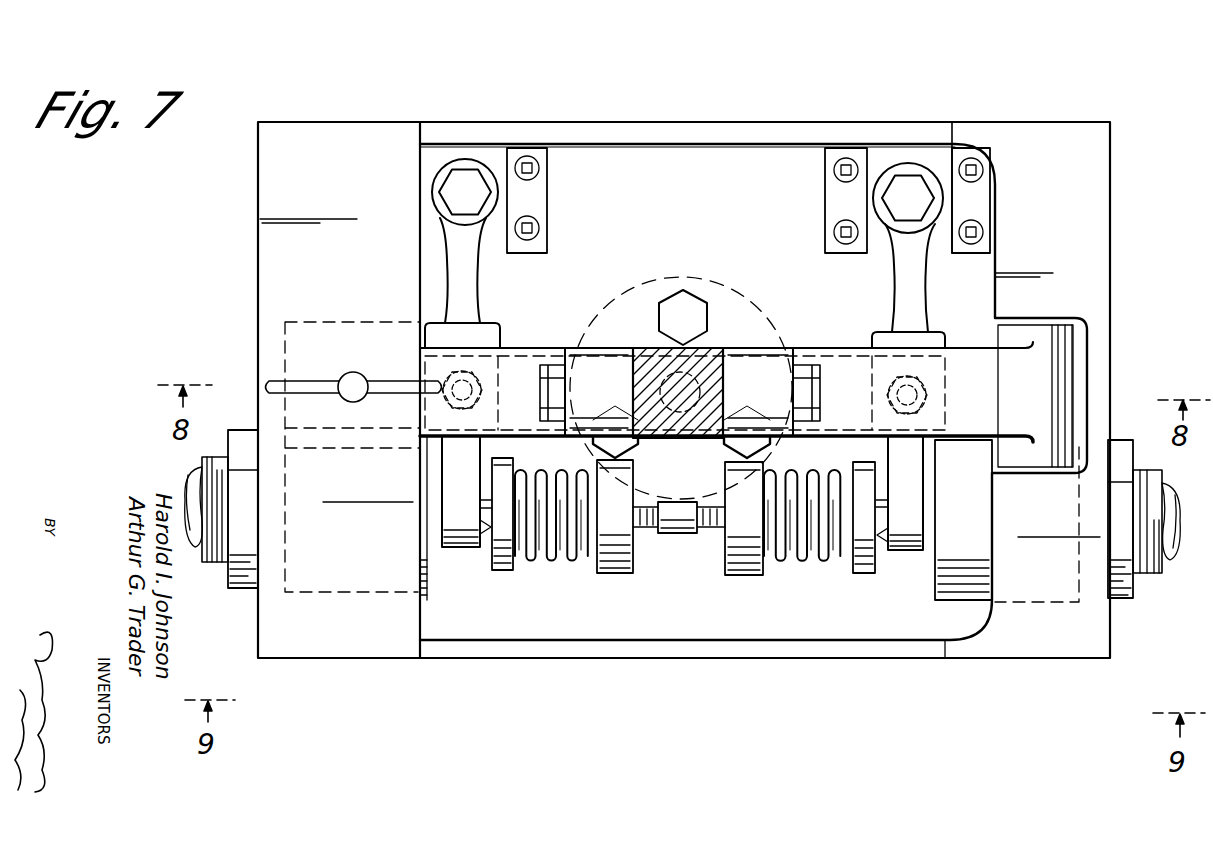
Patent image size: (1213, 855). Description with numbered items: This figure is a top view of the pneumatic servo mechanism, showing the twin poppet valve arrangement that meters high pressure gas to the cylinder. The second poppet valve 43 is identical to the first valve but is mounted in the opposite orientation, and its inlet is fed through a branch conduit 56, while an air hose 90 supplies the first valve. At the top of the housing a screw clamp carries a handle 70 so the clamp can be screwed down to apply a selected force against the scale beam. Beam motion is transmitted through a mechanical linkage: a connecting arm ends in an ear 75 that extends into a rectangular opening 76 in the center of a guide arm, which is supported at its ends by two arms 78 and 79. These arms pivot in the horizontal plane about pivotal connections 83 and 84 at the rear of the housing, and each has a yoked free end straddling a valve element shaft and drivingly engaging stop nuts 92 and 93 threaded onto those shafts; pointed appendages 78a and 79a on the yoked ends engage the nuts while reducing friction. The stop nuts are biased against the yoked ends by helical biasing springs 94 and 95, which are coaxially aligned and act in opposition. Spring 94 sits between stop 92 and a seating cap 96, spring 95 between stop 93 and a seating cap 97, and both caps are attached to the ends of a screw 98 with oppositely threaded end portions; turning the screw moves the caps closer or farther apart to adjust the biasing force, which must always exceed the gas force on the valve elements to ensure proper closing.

The poppet valve 43 is at (1030, 604).
The branch conduit 56 is at (1172, 562).
The handle 70 is at (338, 378).
The ear 75 is at (450, 370).
The rectangular opening 76 is at (915, 393).
The arm 78 is at (442, 253).
The pointed appendage 78a is at (487, 545).
The arm 79 is at (942, 255).
The pointed appendage 79a is at (884, 548).
The pivotal connection 83 is at (460, 191).
The pivotal connection 84 is at (925, 194).
The air hose 90 is at (188, 467).
The stop nut 92 is at (505, 575).
The stop nut 93 is at (866, 575).
The biasing spring 94 is at (557, 560).
The biasing spring 95 is at (790, 560).
The spring seating cap 96 is at (617, 573).
The spring seating cap 97 is at (735, 576).
The screw 98 is at (672, 502).